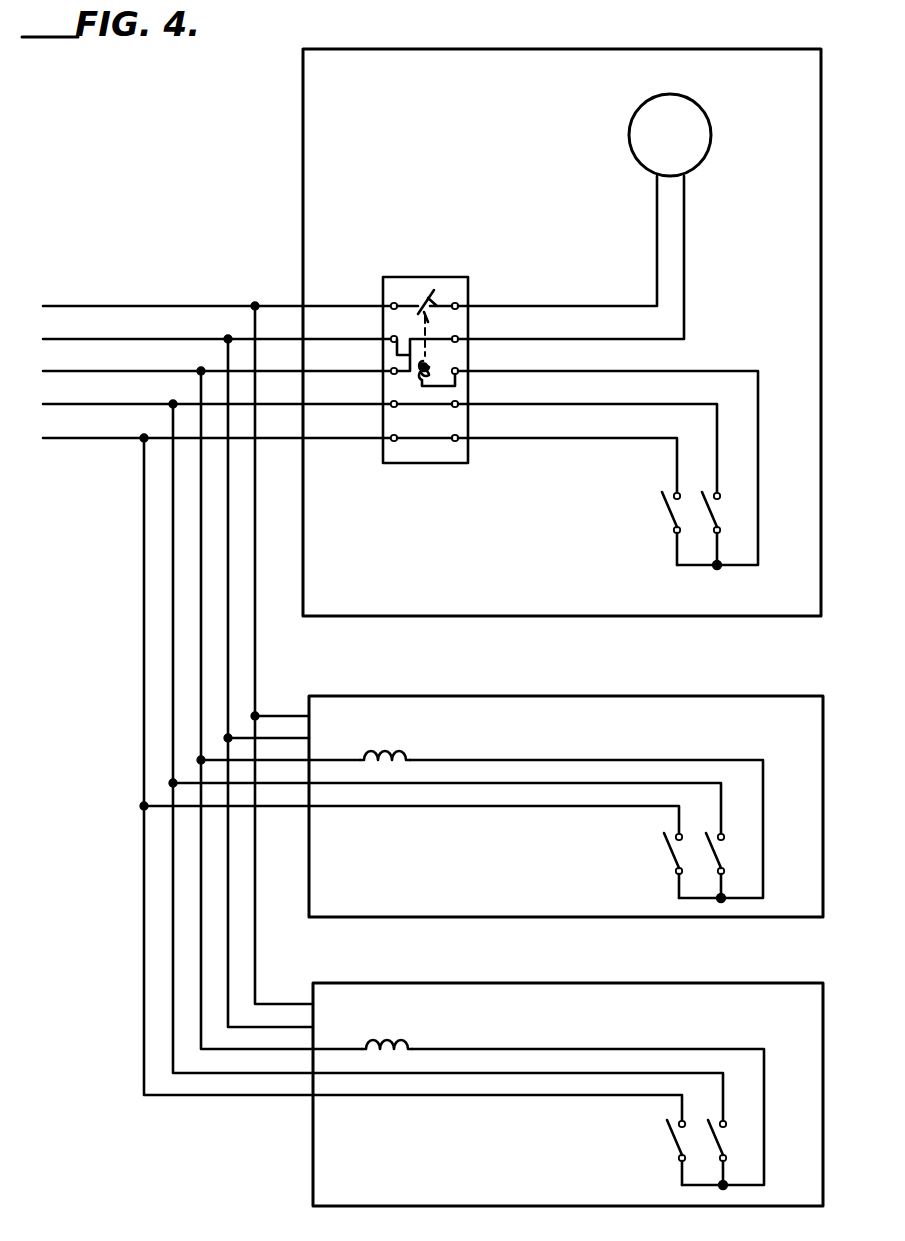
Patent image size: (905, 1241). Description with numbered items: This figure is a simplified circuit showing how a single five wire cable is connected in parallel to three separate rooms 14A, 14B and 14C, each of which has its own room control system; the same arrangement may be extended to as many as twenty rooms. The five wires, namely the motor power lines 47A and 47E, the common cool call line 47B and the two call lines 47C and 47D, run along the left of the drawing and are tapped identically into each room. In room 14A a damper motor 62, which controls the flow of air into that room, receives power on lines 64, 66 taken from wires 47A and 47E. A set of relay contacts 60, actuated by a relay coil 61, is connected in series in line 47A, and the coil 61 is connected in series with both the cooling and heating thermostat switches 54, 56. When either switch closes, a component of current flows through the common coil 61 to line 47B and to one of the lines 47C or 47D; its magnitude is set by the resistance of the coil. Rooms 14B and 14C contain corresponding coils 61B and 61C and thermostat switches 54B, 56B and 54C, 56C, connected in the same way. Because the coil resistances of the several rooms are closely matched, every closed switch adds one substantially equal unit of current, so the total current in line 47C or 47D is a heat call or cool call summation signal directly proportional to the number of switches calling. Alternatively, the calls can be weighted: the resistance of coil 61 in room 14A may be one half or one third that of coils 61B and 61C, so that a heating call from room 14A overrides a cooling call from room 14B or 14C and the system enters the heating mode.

The room 14A is at (300, 116).
The room 14B is at (377, 693).
The room 14C is at (379, 983).
The motor power line 47A is at (64, 306).
The cool call line 47B is at (60, 339).
The call line 47C is at (55, 438).
The call line 47D is at (57, 404).
The motor power line 47E is at (60, 371).
The relay contacts 60 is at (416, 300).
The relay coil 61 is at (440, 362).
The coil 61B is at (397, 757).
The coil 61C is at (400, 1045).
The damper motor 62 is at (630, 123).
The motor power line 64 is at (657, 234).
The motor power line 66 is at (684, 242).
The thermostat switch 54 is at (717, 515).
The thermostat switch 56 is at (660, 518).
The thermostat switch 54B is at (708, 864).
The thermostat switch 56B is at (661, 851).
The thermostat switch 54C is at (712, 1153).
The thermostat switch 56C is at (668, 1136).